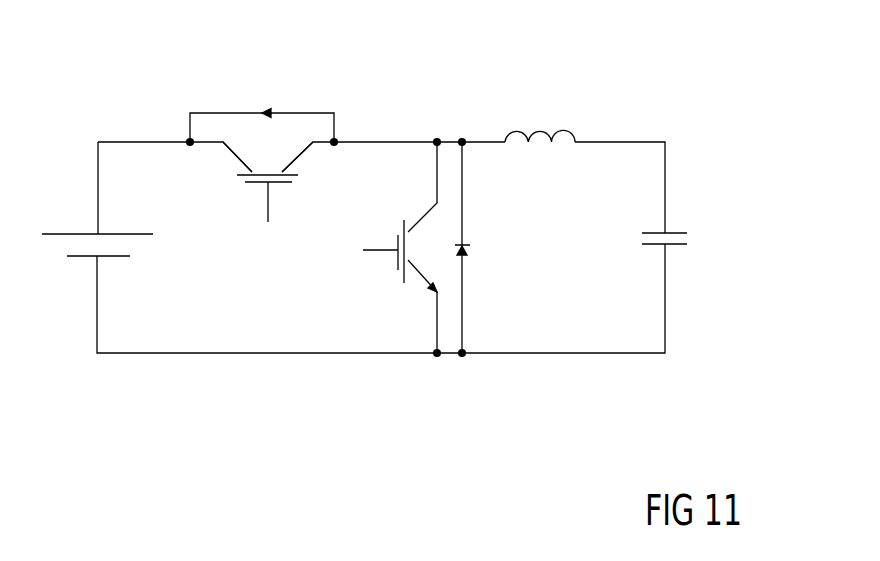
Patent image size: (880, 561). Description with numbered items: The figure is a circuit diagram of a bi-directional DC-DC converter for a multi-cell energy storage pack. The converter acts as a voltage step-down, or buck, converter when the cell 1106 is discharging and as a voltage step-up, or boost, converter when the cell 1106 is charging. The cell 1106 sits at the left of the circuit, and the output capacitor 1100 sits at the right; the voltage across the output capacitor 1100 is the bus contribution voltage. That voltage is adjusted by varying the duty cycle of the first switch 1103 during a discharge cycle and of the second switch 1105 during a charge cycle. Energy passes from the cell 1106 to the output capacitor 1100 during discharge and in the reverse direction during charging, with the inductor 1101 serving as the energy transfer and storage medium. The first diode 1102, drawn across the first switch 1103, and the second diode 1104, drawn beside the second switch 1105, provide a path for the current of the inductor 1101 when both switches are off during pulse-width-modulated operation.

The cell 1106 is at (58, 221).
The diode D1 1102 is at (264, 113).
The switch S1 1103 is at (301, 182).
The switch S2 1105 is at (398, 271).
The diode D2 1104 is at (518, 238).
The inductor L1 1101 is at (590, 117).
The capacitor C1 1100 is at (715, 227).